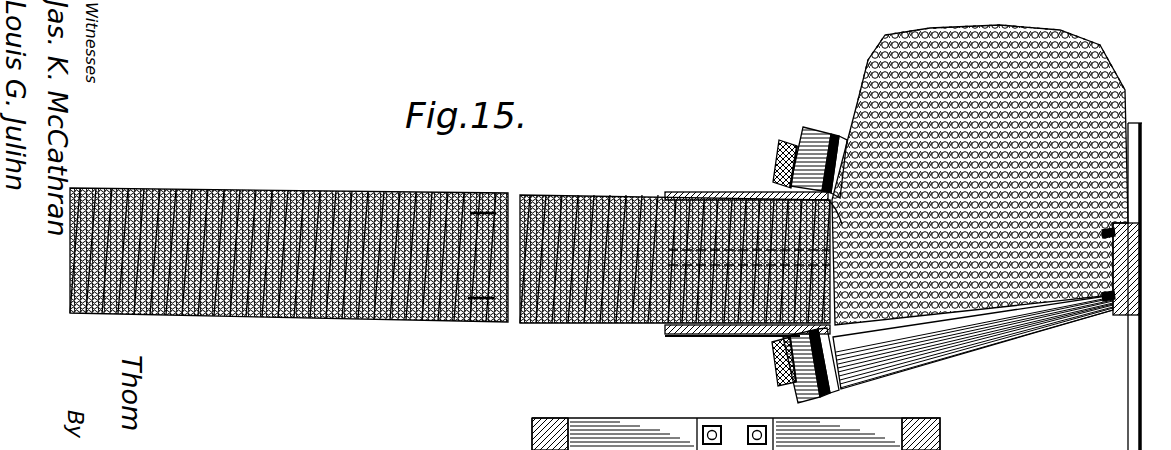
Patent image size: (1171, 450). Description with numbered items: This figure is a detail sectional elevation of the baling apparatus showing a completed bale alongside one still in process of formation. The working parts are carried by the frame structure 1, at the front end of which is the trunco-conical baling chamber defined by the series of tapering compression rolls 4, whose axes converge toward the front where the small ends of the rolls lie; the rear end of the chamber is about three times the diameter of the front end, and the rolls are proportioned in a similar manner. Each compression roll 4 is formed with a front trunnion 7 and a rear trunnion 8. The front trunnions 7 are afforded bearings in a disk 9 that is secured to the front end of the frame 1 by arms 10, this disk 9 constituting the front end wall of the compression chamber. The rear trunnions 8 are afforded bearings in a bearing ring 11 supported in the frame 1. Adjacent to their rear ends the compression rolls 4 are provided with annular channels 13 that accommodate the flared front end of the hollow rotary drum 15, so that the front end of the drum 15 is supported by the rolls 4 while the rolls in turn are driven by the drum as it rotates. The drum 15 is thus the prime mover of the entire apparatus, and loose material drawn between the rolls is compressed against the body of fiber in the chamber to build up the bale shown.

The frame structure 1 is at (736, 419).
The compression rolls 4 is at (807, 127).
The front trunnions 7 is at (1108, 316).
The rear trunnions 8 is at (778, 153).
The disk 9 is at (1110, 228).
The arms 10 is at (1128, 378).
The bearing ring 11 is at (797, 142).
The annular channels 13 is at (842, 140).
The hollow rotary drum 15 is at (705, 192).